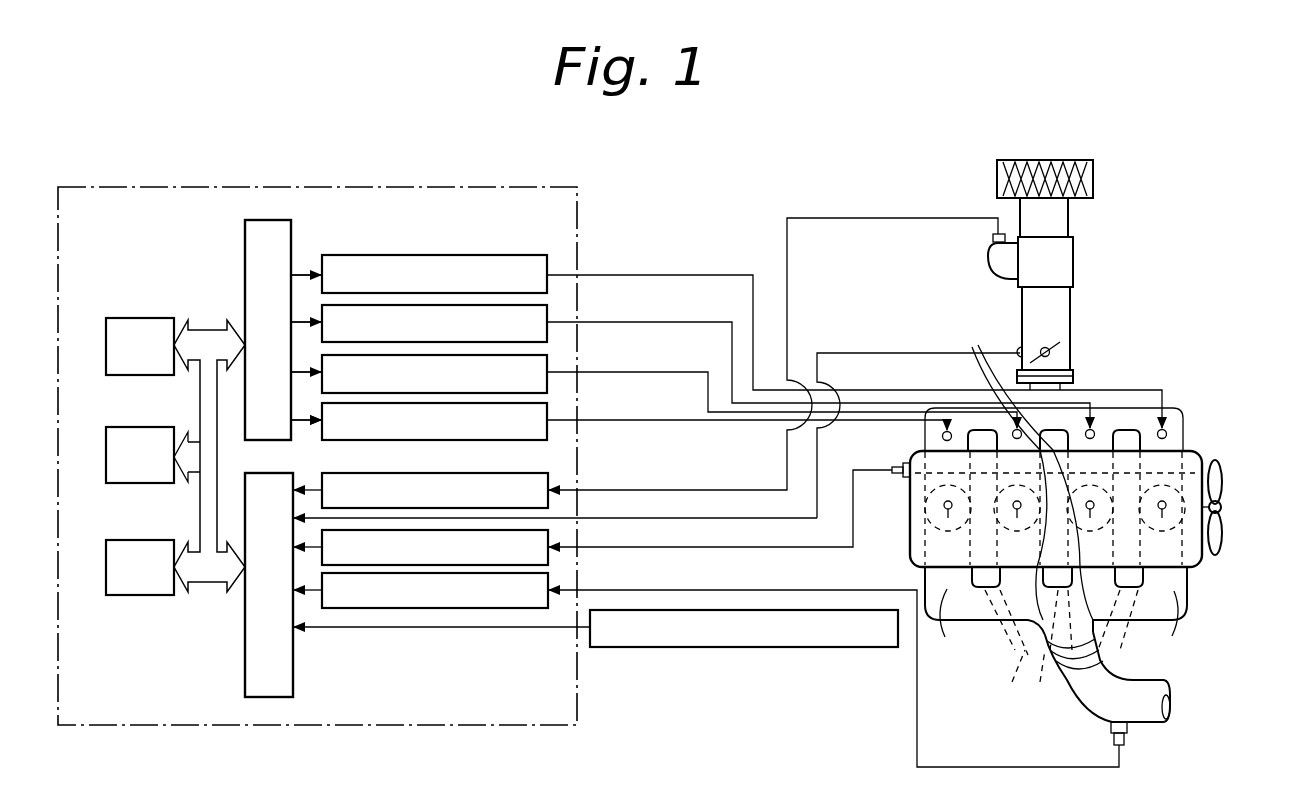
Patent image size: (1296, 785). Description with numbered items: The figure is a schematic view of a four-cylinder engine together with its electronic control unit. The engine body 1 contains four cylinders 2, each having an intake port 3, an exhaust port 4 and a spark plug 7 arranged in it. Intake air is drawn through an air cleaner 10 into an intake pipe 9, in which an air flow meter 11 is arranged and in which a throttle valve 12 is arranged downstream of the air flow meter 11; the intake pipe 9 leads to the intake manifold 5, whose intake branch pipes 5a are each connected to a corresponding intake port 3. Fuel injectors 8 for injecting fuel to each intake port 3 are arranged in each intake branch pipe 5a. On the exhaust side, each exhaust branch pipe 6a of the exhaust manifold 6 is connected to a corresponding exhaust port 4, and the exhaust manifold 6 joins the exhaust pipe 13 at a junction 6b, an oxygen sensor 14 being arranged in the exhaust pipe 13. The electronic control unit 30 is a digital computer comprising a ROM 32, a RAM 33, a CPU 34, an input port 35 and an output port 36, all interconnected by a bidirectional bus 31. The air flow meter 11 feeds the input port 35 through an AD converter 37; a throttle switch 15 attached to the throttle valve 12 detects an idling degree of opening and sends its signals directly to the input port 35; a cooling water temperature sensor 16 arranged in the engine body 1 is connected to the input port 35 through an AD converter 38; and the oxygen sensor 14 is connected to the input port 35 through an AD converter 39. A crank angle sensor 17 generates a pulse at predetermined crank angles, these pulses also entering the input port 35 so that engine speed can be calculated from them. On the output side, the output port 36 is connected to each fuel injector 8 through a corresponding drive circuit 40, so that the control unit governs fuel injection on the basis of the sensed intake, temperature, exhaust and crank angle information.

The engine body 1 is at (1206, 571).
The cylinder 2 is at (1224, 492).
The intake port 3 is at (909, 479).
The exhaust port 4 is at (1200, 567).
The intake manifold 5 is at (1097, 390).
The intake branch pipe 5a is at (932, 441).
The exhaust manifold 6 is at (984, 633).
The exhaust branch pipe 6a is at (1212, 640).
The junction 6b is at (1049, 642).
The spark plug 7 is at (1003, 628).
The fuel injector 8 is at (960, 418).
The intake pipe 9 is at (1070, 300).
The air cleaner 10 is at (1093, 181).
The air flow meter 11 is at (1073, 251).
The throttle valve 12 is at (1050, 352).
The exhaust pipe 13 is at (1135, 684).
The O2 sensor 14 is at (1122, 741).
The throttle switch 15 is at (1019, 352).
The cooling water temperature sensor 16 is at (883, 465).
The crank angle sensor 17 is at (769, 648).
The electronic control unit 30 is at (400, 182).
The bidirectional bus 31 is at (207, 330).
The ROM 32 is at (140, 317).
The RAM 33 is at (140, 426).
The CPU 34 is at (140, 540).
The input port 35 is at (293, 683).
The output port 36 is at (291, 240).
The AD converter 37 is at (548, 482).
The AD converter 38 is at (548, 530).
The AD converter 39 is at (548, 583).
The drive circuit 40 is at (547, 290).